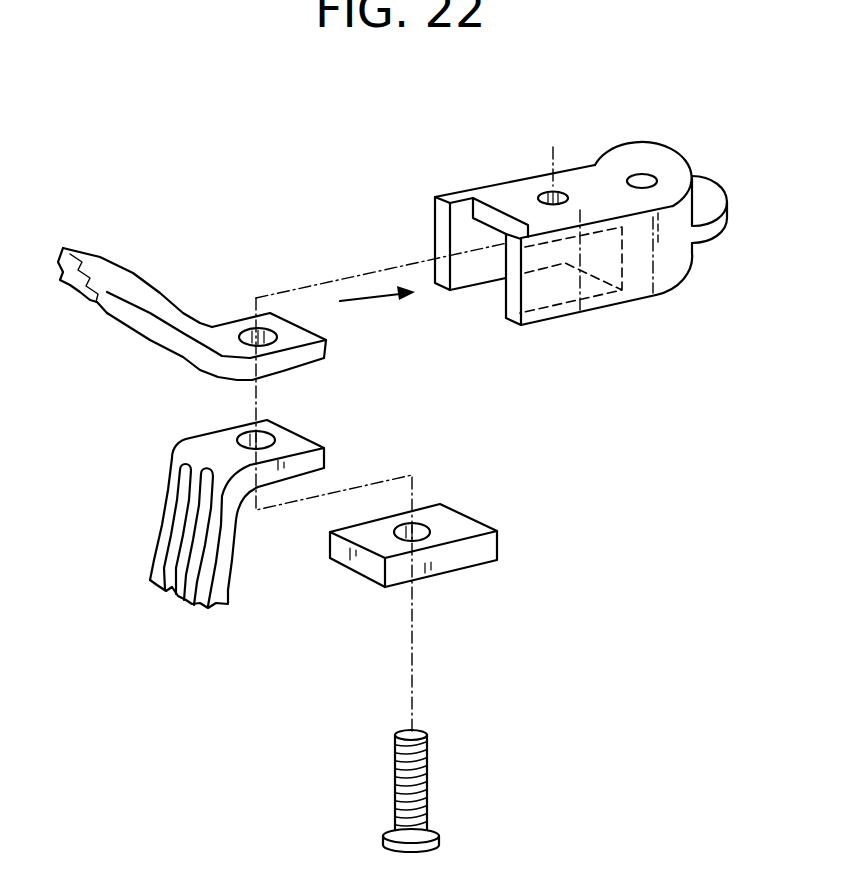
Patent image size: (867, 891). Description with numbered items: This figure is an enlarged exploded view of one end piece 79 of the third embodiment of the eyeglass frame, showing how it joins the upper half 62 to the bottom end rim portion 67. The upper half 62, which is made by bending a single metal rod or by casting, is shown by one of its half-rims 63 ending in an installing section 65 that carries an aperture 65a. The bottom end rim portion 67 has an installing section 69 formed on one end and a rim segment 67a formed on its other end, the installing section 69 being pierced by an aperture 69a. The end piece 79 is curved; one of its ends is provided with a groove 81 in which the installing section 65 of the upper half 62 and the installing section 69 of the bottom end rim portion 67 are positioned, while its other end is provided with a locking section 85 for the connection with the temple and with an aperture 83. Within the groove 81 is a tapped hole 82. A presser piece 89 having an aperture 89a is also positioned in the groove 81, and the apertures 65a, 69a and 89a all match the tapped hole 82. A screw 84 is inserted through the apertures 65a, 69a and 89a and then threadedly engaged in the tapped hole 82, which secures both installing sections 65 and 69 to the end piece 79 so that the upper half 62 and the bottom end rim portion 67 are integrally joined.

The upper half 62 is at (204, 280).
The half-rim 63 is at (163, 292).
The installing section 65 is at (271, 334).
The aperture 65a is at (266, 342).
The bottom end rim portion 67 is at (224, 504).
The rim segment 67a is at (162, 528).
The installing section 69 is at (278, 437).
The aperture 69a is at (240, 435).
The end piece 79 is at (571, 205).
The groove 81 is at (488, 236).
The tapped hole 82 is at (548, 192).
The aperture 83 is at (638, 180).
The screw 84 is at (428, 777).
The locking section 85 is at (712, 196).
The presser piece 89 is at (431, 521).
The aperture 89a is at (428, 523).